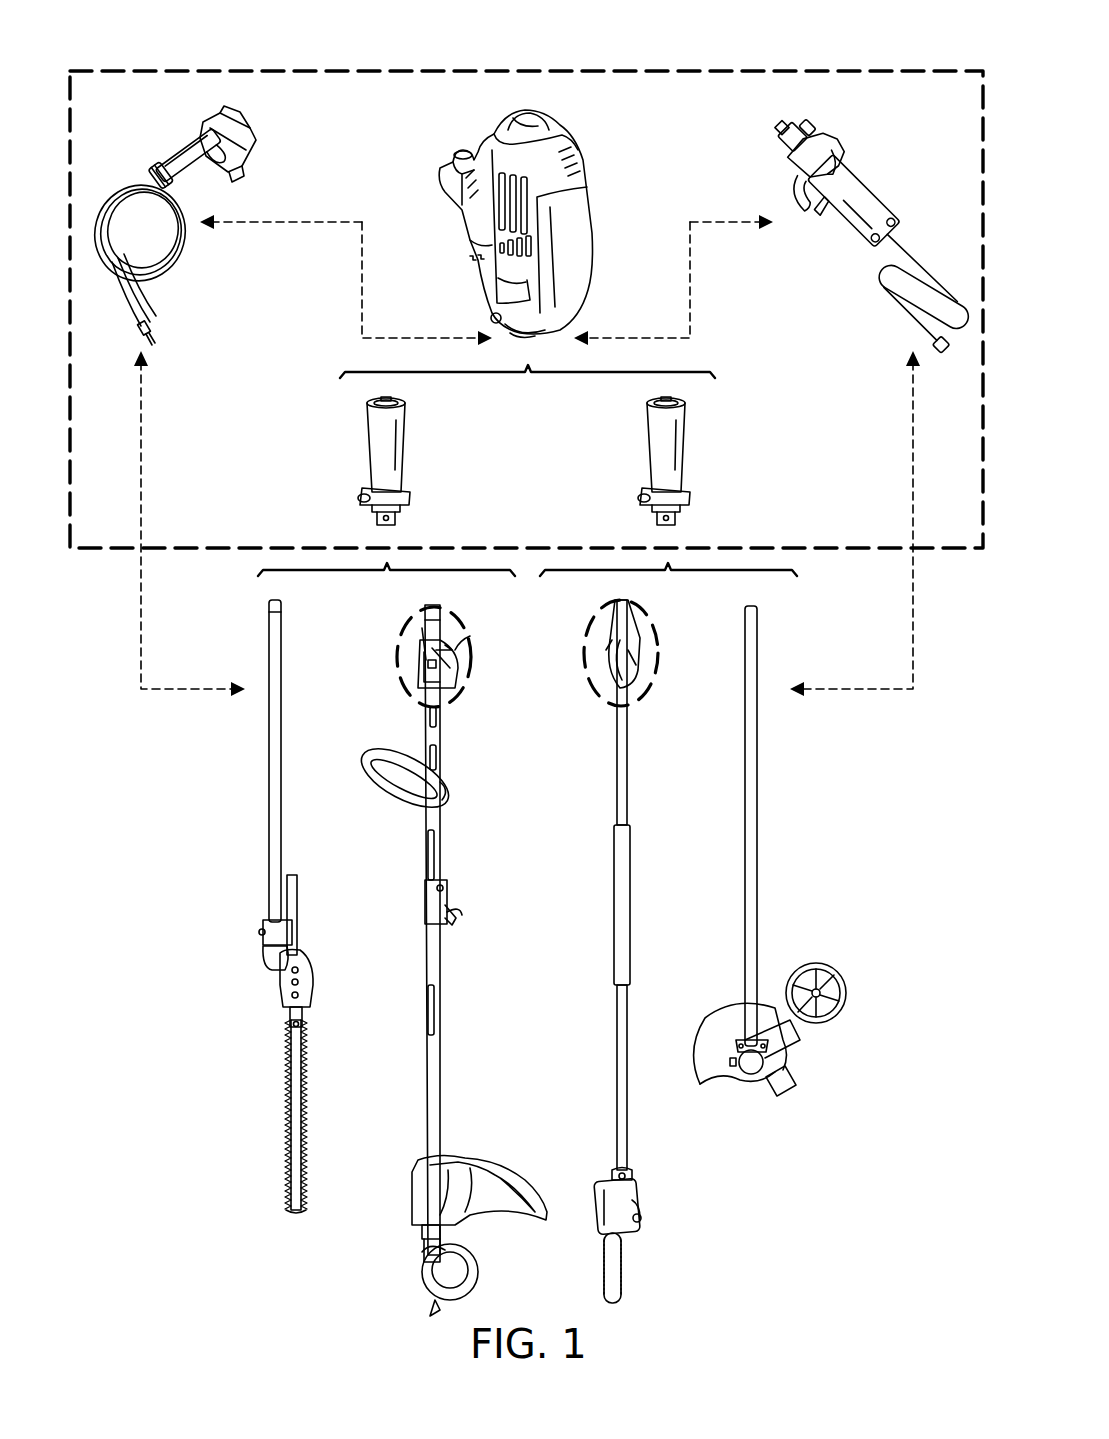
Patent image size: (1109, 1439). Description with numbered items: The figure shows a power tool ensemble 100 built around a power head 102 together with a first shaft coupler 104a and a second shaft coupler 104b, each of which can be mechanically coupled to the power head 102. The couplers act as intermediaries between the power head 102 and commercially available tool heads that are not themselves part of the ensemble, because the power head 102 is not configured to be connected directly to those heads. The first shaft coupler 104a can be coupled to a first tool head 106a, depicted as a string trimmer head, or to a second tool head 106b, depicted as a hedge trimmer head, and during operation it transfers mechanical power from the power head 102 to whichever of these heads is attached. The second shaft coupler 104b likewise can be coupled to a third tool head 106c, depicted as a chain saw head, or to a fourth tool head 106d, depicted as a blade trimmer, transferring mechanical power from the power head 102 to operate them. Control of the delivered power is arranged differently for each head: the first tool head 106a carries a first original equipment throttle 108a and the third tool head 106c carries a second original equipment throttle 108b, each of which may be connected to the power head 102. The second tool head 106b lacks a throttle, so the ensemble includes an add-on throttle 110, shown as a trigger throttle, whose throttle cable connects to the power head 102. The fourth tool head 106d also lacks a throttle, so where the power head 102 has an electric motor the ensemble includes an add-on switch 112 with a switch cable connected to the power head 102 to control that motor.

The power tool ensemble 100 is at (440, 66).
The power head 102 is at (418, 160).
The first shaft coupler 104a is at (346, 455).
The second shaft coupler 104b is at (707, 455).
The first tool head 106a is at (367, 1243).
The second tool head 106b is at (230, 1068).
The third tool head 106c is at (675, 1243).
The fourth tool head 106d is at (838, 1068).
The first original equipment throttle 108a is at (398, 628).
The second original equipment throttle 108b is at (582, 678).
The add-on throttle 110 is at (147, 148).
The add-on switch 112 is at (894, 183).